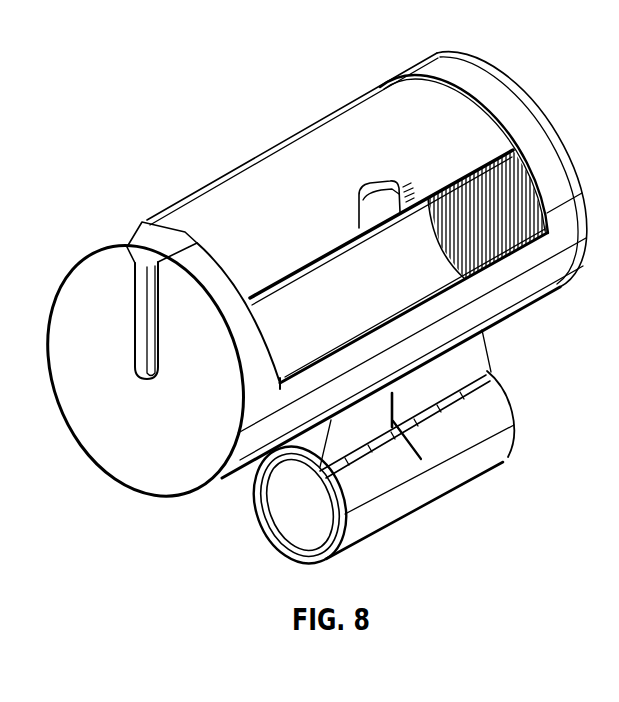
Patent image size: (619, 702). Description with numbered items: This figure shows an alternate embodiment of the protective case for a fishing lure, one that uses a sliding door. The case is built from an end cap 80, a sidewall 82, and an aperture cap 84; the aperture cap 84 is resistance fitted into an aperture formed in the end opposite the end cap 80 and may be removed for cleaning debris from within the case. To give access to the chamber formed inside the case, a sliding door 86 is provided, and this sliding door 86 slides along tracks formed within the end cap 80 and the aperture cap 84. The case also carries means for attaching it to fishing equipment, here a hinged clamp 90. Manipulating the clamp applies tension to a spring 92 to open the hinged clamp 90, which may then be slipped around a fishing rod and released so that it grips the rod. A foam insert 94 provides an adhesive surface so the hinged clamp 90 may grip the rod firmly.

The end cap 80 is at (173, 418).
The sidewall 82 is at (540, 270).
The aperture cap 84 is at (510, 193).
The sliding door 86 is at (380, 127).
The hinged clamp 90 is at (428, 482).
The spring 92 is at (487, 376).
The foam insert 94 is at (280, 540).